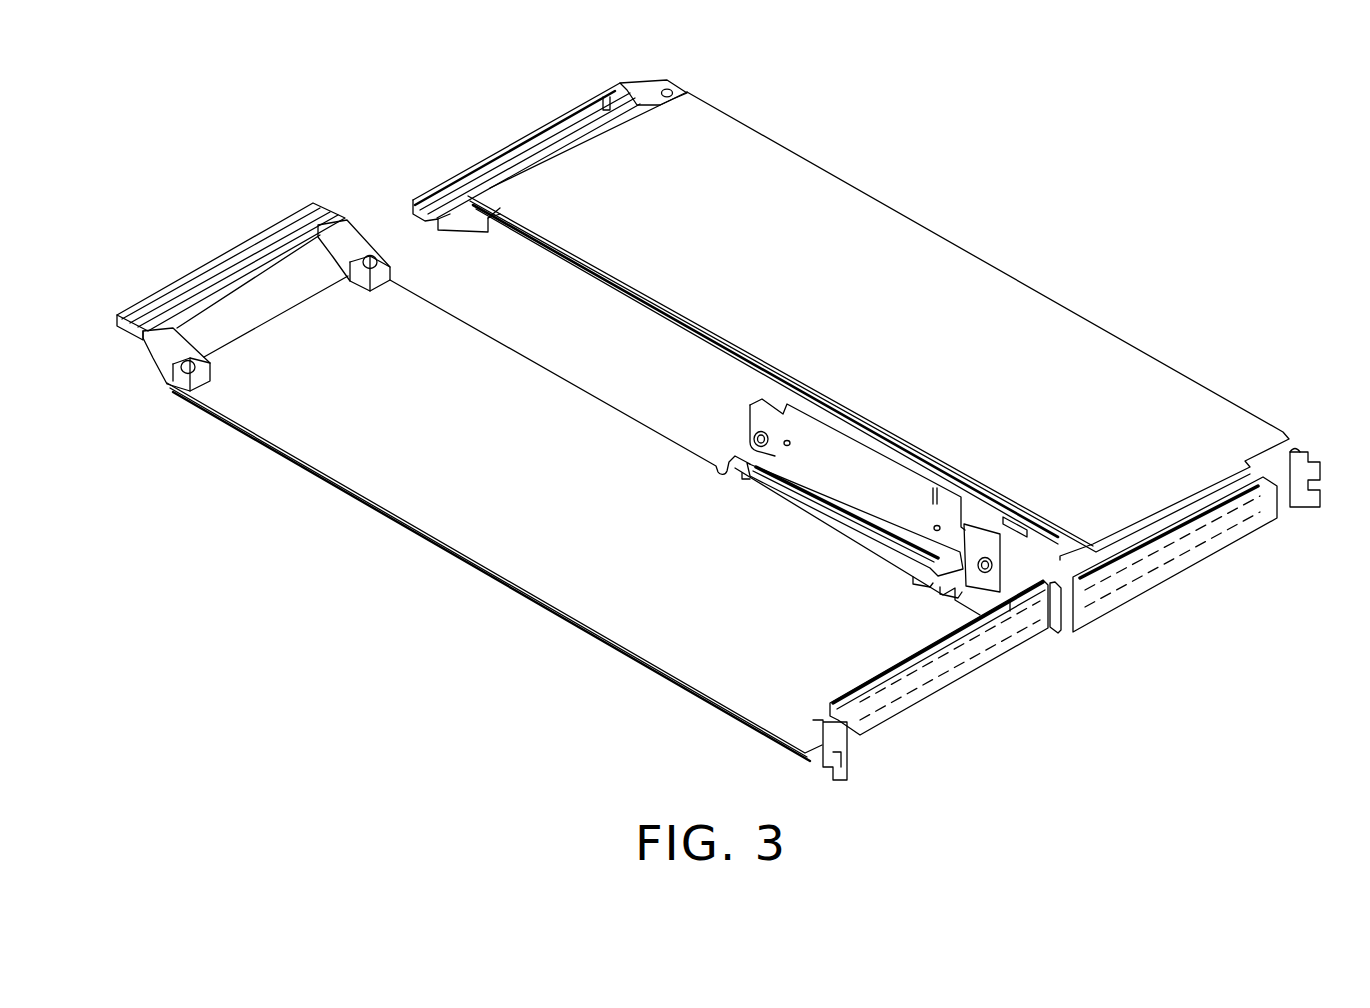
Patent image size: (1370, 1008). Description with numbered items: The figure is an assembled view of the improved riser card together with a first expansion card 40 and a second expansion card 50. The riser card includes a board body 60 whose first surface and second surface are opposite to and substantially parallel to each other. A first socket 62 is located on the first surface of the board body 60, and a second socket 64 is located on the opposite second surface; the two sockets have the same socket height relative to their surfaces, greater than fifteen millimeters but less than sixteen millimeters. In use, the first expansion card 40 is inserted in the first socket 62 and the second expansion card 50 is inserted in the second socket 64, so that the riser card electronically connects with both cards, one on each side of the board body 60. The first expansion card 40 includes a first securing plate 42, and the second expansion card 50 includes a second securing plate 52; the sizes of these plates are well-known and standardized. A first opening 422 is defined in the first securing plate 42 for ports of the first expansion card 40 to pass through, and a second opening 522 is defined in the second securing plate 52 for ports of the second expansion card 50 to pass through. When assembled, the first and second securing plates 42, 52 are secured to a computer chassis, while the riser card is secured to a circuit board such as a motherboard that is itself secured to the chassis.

The first expansion card 40 is at (322, 442).
The first securing plate 42 is at (933, 680).
The first opening 422 is at (910, 676).
The second expansion card 50 is at (1167, 403).
The second securing plate 52 is at (1187, 541).
The second opening 522 is at (1153, 560).
The board body 60 is at (757, 410).
The first socket 62 is at (753, 438).
The second socket 64 is at (977, 515).